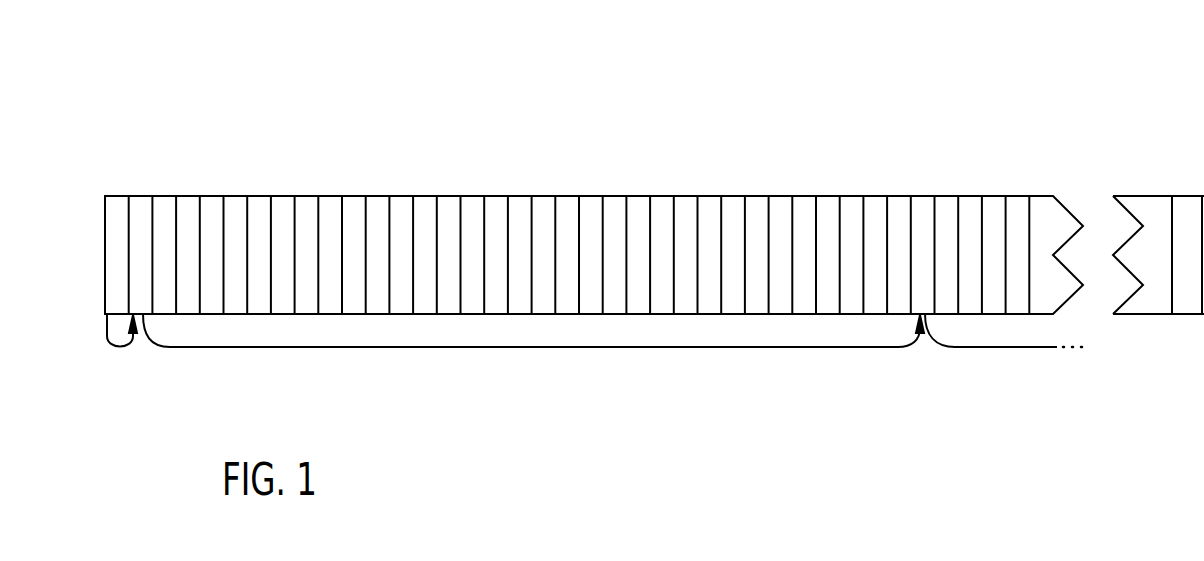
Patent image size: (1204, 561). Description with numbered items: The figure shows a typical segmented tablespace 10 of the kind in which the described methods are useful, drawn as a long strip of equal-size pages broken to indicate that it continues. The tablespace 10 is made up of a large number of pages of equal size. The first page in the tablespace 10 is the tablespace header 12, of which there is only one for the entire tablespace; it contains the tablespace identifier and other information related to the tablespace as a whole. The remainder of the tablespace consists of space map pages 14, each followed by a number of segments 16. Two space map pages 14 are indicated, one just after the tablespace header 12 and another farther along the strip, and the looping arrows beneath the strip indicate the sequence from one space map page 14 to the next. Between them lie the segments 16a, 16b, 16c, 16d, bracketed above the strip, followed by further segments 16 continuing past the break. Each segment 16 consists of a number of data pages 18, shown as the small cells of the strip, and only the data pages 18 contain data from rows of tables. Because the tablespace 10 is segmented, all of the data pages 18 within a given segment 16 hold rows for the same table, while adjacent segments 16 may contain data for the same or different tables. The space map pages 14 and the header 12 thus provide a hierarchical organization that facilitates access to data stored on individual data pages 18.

The segmented tablespace 10 is at (105, 255).
The tablespace header 12 is at (125, 195).
The space map page 14 is at (137, 195).
The segment 16 is at (1202, 160).
The segment 16a is at (340, 160).
The segment 16b is at (531, 160).
The segment 16c is at (722, 160).
The segment 16d is at (912, 160).
The data page 18 is at (162, 195).